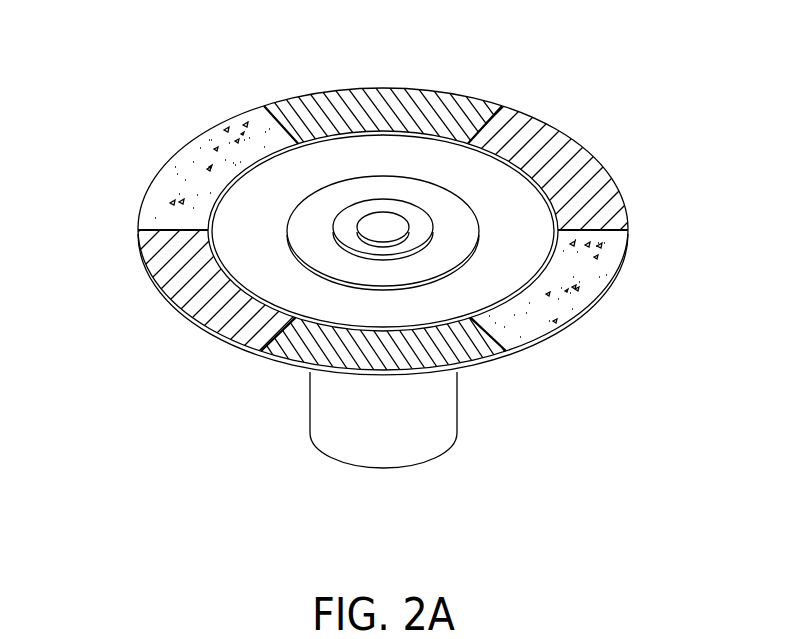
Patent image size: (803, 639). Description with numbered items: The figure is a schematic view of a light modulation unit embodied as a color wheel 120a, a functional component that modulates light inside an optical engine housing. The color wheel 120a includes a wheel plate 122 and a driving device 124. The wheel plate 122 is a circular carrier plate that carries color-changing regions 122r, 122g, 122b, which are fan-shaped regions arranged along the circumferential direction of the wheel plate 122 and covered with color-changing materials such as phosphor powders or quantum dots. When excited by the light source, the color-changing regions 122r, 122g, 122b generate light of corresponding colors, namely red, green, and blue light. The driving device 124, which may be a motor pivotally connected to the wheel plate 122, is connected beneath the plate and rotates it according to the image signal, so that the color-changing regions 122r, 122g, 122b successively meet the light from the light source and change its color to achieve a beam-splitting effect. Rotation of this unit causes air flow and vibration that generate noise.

The color wheel 120a is at (158, 43).
The wheel plate 122 is at (237, 253).
The color-changing region 122g is at (443, 104).
The color-changing region 122r is at (590, 175).
The color-changing region 122b is at (192, 167).
The driving device 124 is at (408, 437).